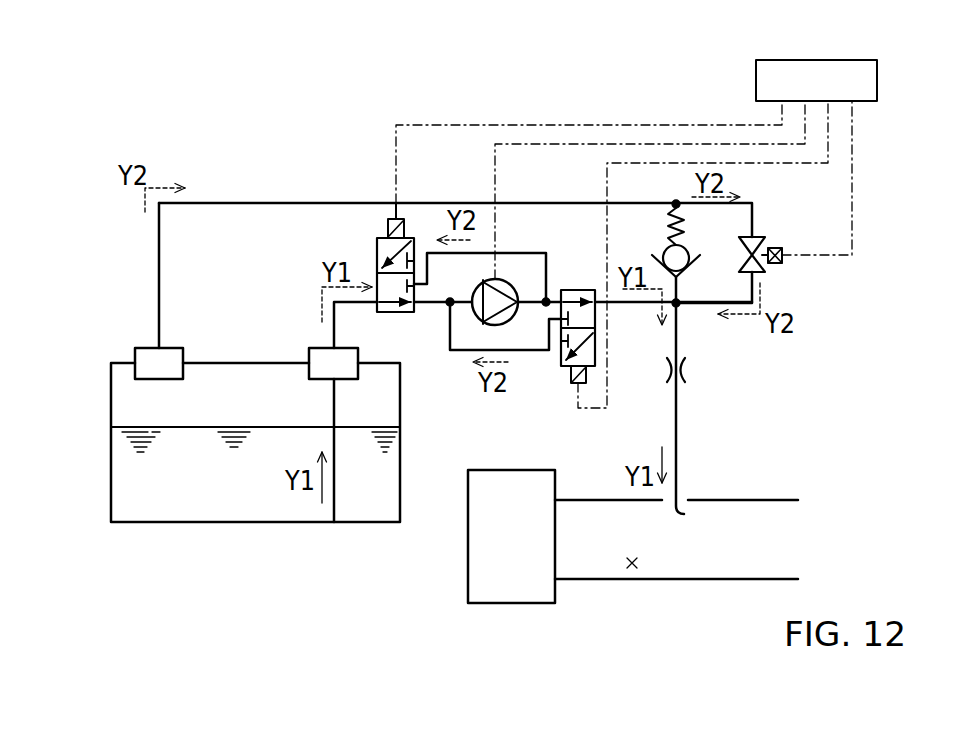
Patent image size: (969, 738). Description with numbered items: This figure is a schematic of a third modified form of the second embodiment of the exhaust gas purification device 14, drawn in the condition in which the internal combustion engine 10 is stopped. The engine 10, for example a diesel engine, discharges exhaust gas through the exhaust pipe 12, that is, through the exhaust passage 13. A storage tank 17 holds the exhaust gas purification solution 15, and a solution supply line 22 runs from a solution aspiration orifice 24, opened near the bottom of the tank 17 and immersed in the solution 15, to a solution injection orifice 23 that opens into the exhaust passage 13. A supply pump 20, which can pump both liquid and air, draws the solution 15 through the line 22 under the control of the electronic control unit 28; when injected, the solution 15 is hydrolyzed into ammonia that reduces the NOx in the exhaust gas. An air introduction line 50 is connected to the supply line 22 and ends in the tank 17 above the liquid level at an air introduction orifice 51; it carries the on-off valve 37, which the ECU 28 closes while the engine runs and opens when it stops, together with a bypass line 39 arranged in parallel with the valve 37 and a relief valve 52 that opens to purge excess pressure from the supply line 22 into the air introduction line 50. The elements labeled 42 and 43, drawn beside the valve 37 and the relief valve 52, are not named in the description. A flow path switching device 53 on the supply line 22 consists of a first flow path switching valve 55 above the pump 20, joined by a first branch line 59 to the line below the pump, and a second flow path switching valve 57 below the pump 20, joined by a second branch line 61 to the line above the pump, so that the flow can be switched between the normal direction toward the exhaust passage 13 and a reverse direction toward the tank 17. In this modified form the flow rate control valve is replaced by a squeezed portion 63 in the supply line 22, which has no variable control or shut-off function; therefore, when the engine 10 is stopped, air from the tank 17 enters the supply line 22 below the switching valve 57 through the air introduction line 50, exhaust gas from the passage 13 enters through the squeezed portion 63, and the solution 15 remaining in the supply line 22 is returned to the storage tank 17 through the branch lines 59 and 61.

The internal combustion engine 10 is at (510, 482).
The exhaust pipe 12 is at (735, 500).
The exhaust passage 13 is at (630, 570).
The exhaust gas purification device 14 is at (240, 168).
The exhaust gas purification solution 15 is at (217, 493).
The storage tank 17 is at (111, 380).
The supply pump 20 is at (483, 327).
The solution supply line 22 is at (333, 335).
The solution injection orifice 23 is at (684, 514).
The solution aspiration orifice 24 is at (333, 522).
The electronic control unit 28 is at (842, 60).
The on-off valve 37 is at (768, 268).
The bypass line 39 is at (677, 288).
The shutoff valve 42 is at (700, 248).
The valve body 43 is at (680, 246).
The air introduction line 50 is at (157, 238).
The air introduction orifice 51 is at (159, 380).
The relief valve 52 is at (660, 240).
The flow path switching device 53 is at (332, 222).
The first flow path switching valve 55 is at (373, 242).
The second flow path switching valve 57 is at (567, 282).
The first branch line 59 is at (515, 252).
The second branch line 61 is at (537, 352).
The squeezed portion 63 is at (660, 372).